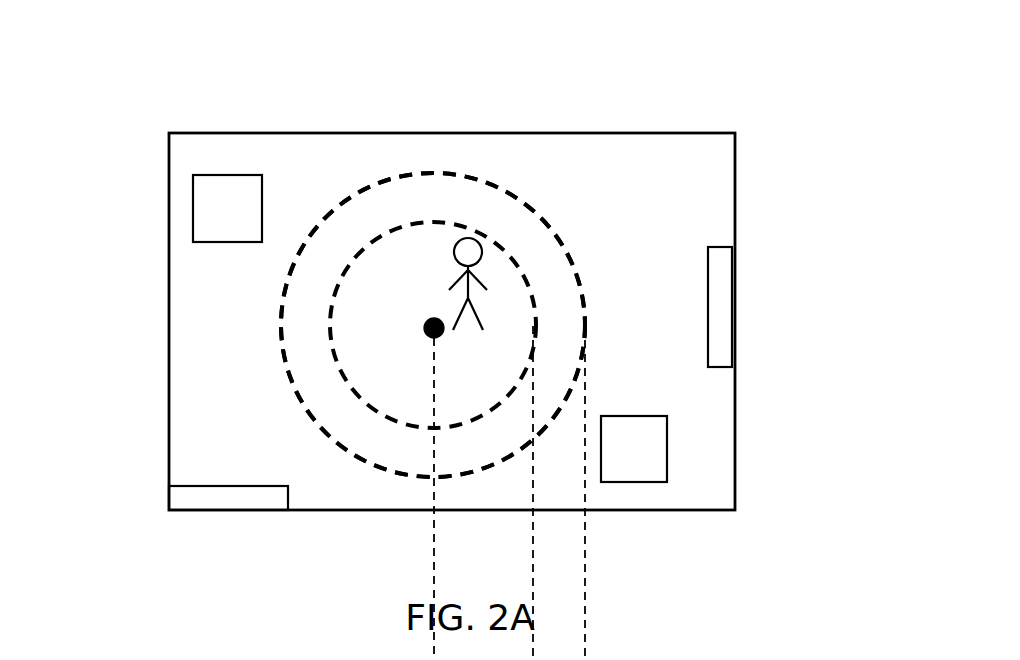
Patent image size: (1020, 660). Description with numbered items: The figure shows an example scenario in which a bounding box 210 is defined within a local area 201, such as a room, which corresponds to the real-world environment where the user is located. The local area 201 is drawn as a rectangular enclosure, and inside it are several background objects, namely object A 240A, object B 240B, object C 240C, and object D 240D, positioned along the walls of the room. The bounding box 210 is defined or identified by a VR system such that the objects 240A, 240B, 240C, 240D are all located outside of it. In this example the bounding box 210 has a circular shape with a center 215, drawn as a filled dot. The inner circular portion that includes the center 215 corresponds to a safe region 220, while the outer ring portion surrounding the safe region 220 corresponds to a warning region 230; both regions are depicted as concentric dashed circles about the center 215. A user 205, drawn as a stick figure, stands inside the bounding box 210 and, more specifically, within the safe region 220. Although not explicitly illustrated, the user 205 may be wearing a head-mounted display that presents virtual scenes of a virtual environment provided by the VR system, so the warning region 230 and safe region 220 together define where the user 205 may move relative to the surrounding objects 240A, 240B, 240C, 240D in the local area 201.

The local area 201 is at (198, 145).
The warning region 230 is at (333, 236).
The safe region 220 is at (401, 268).
The bounding box 210 is at (540, 212).
The user 205 is at (482, 270).
The center 215 is at (432, 340).
The object A 240A is at (717, 328).
The object B 240B is at (615, 470).
The object C 240C is at (228, 496).
The object D 240D is at (210, 211).